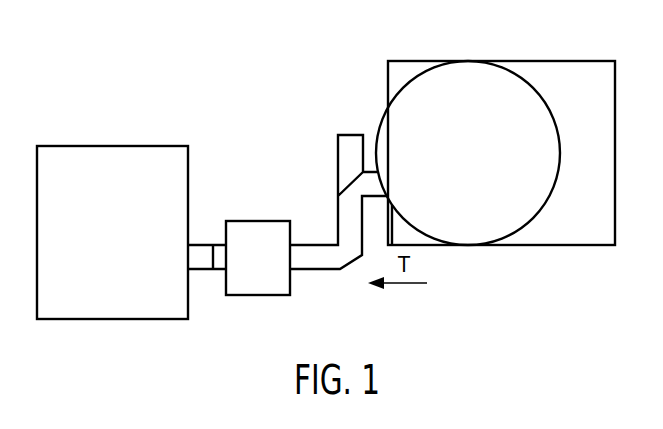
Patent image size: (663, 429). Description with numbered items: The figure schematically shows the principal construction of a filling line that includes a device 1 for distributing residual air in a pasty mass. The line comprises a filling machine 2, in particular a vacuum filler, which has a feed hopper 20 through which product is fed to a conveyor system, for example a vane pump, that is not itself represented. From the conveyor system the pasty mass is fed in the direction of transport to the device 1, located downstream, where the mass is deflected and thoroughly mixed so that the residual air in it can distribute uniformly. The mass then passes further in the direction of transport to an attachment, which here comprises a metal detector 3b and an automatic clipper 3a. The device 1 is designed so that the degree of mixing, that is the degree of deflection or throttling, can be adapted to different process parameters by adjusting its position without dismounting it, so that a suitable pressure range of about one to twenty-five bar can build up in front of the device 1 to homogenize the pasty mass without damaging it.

The device for distributing residual air 1 is at (338, 180).
The filling machine 2 is at (596, 61).
The feed hopper 20 is at (410, 67).
The automatic clipper 3a is at (169, 146).
The metal detector 3b is at (268, 221).